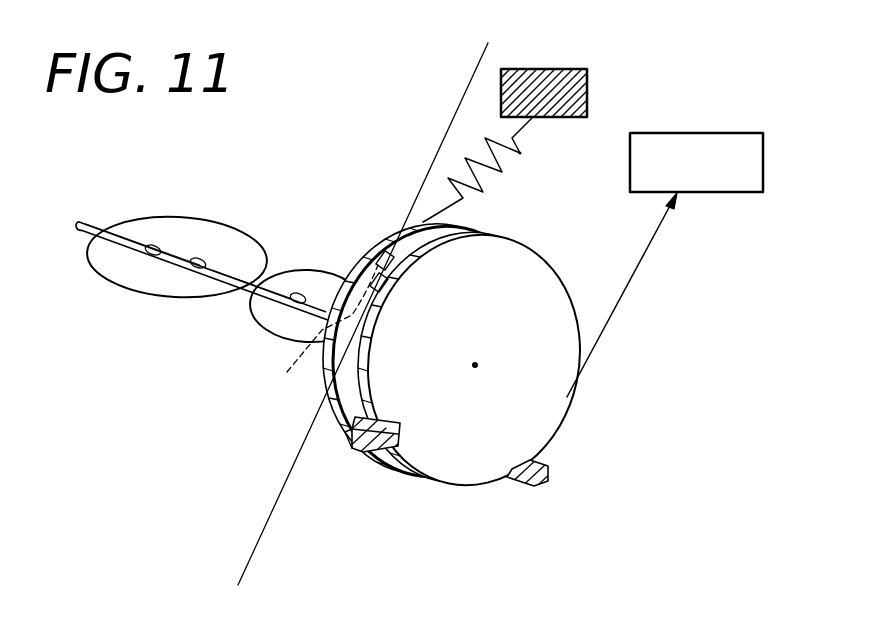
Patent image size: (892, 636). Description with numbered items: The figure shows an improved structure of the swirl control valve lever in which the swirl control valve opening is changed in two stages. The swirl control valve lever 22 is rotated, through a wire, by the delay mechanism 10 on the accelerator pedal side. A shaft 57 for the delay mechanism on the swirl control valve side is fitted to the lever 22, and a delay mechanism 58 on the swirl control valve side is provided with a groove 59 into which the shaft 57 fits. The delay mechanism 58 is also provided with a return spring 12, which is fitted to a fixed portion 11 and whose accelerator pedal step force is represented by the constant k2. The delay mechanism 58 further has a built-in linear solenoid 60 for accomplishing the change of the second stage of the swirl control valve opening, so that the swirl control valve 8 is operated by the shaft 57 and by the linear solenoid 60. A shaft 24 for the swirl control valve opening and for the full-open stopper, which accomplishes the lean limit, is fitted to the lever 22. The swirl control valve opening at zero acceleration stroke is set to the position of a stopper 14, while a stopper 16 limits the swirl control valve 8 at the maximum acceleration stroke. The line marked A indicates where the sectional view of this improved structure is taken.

The swirl control valve 8 is at (158, 300).
The delay mechanism 10 is at (723, 195).
The fixed portion 11 is at (560, 69).
The return spring 12 is at (520, 153).
The stopper 14 is at (337, 434).
The stopper 16 is at (548, 480).
The swirl control valve lever 22 is at (447, 484).
The shaft for swirl control valve opening and full-open stopper 24 is at (361, 452).
The shaft for the delay mechanism 57 is at (394, 252).
The delay mechanism 58 is at (413, 247).
The groove 59 is at (377, 278).
The linear solenoid 60 is at (314, 328).
The line A-B A is at (368, 298).
The constant k2 is at (480, 169).